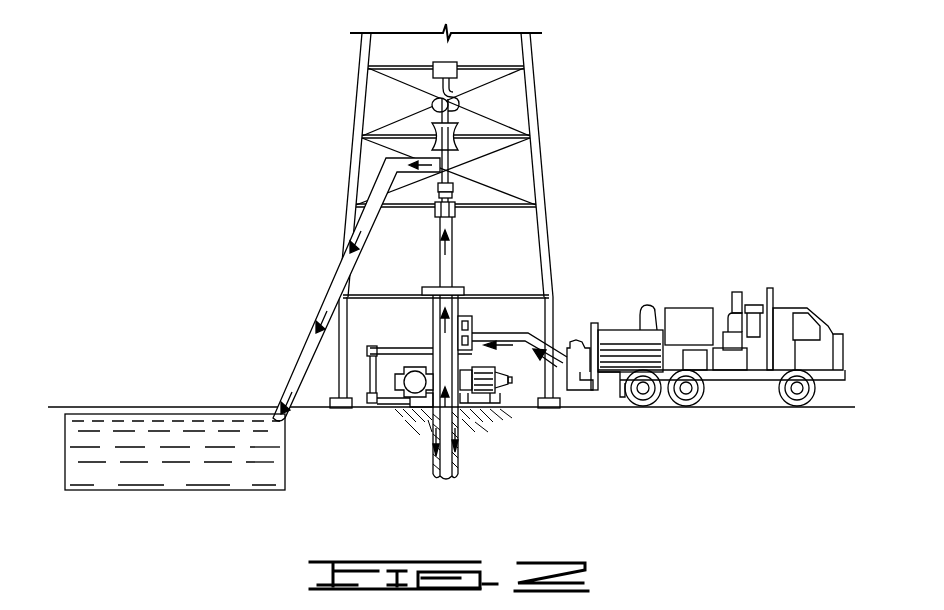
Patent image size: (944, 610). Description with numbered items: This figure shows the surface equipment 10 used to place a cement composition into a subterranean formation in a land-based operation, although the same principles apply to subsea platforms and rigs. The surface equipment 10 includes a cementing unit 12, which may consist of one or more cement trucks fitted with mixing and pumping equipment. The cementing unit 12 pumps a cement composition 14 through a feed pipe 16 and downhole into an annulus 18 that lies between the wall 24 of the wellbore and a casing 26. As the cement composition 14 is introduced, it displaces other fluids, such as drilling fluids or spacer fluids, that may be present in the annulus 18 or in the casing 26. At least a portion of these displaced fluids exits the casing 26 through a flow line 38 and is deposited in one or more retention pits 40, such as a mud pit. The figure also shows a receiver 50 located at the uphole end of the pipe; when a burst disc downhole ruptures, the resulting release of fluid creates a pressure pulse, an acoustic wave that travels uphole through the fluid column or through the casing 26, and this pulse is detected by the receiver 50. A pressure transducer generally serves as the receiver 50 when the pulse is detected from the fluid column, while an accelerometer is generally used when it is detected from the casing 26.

The surface equipment 10 is at (277, 79).
The cementing unit 12 is at (722, 390).
The cement composition 14 is at (460, 455).
The feed pipe 16 is at (540, 336).
The annulus 18 is at (432, 470).
The wall 24 is at (455, 478).
The casing 26 is at (470, 418).
The flow line 38 is at (308, 337).
The retention pit 40 is at (168, 490).
The receiver 50 is at (455, 187).